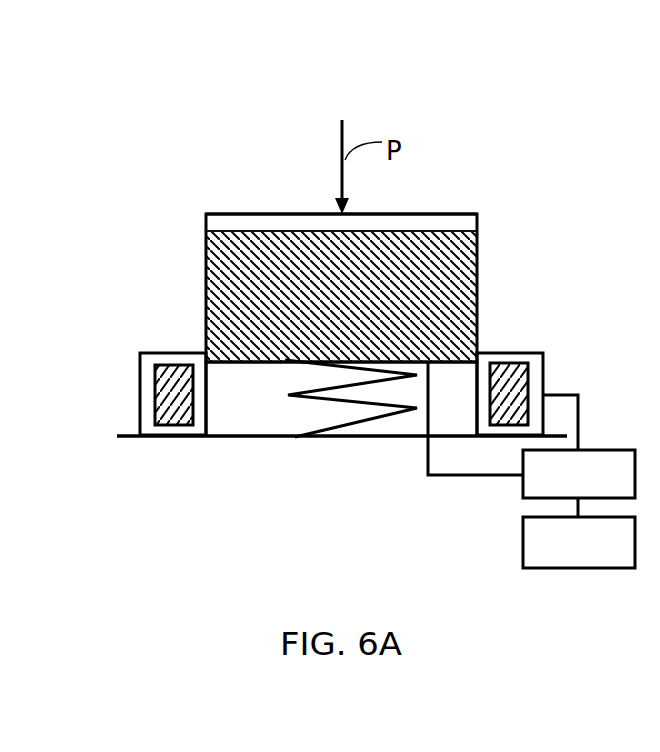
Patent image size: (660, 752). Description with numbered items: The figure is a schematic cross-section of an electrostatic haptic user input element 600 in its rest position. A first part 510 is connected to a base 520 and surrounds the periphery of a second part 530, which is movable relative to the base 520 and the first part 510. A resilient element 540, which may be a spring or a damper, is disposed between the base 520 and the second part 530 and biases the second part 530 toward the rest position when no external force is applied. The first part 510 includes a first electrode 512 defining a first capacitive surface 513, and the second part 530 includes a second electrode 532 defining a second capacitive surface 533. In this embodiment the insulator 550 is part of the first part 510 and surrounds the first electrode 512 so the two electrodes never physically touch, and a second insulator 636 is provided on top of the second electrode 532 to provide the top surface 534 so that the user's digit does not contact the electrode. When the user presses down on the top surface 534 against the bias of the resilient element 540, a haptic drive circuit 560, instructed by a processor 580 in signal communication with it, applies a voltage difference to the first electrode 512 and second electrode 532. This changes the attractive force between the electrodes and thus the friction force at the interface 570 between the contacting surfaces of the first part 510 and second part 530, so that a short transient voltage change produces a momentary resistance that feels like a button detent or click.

The user input element 600 is at (168, 117).
The first part 510 is at (350, 385).
The first electrode 512 is at (517, 365).
The first capacitive surface 513 is at (193, 397).
The base 520 is at (313, 443).
The second part 530 is at (359, 257).
The second electrode 532 is at (443, 247).
The second capacitive surface 533 is at (206, 290).
The top surface 534 is at (333, 212).
The resilient element 540 is at (402, 410).
The insulator 550 is at (486, 357).
The haptic drive circuit 560 is at (556, 491).
The interface 570 is at (222, 355).
The processor 580 is at (556, 559).
The second insulator 636 is at (380, 220).